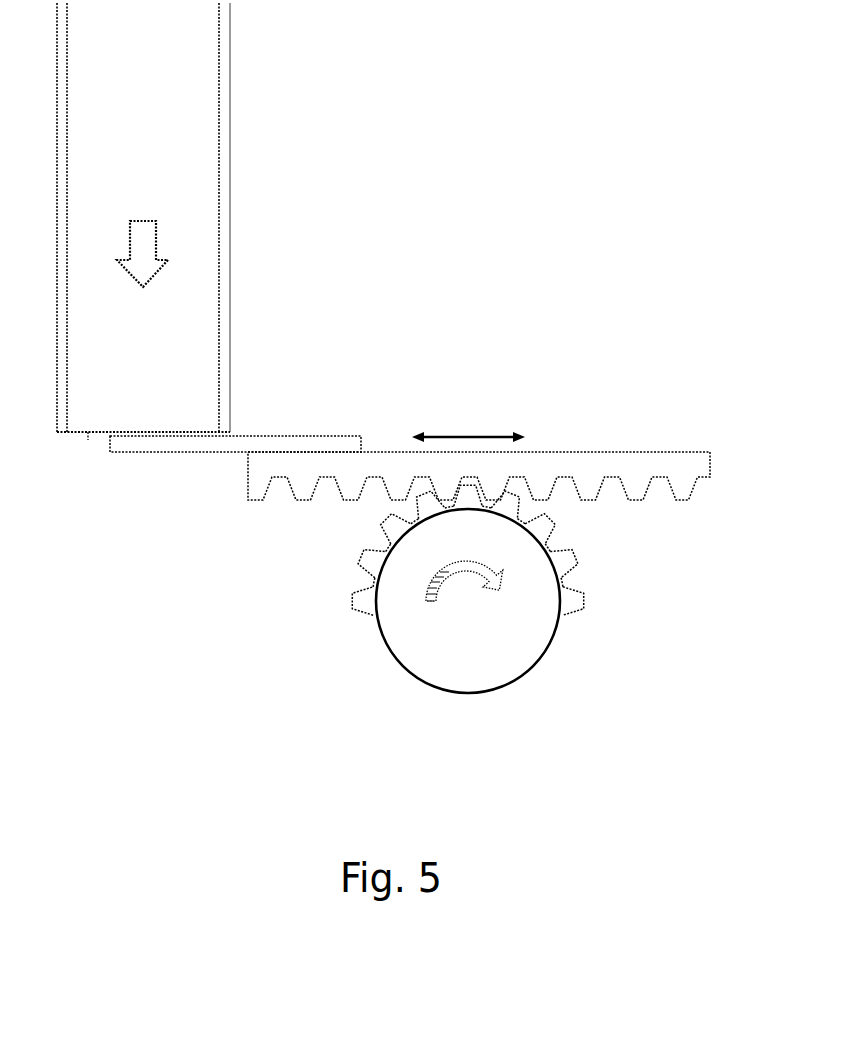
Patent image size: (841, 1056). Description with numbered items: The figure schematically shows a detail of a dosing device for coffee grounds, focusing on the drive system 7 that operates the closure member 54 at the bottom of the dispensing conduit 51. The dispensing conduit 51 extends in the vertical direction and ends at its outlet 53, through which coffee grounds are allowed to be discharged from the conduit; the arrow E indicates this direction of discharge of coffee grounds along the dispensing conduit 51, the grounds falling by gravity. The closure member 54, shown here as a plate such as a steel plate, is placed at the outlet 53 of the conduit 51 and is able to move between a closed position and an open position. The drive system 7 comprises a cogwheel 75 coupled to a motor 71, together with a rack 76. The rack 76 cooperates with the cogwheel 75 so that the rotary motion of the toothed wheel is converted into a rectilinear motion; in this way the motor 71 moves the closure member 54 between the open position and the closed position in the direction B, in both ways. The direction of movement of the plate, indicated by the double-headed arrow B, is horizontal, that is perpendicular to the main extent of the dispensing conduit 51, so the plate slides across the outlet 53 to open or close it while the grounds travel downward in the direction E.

The drive system 7 is at (450, 245).
The dispensing conduit 51 is at (222, 155).
The outlet 53 is at (88, 433).
The closure member 54 is at (177, 440).
The motor 71 is at (477, 668).
The cogwheel 75 is at (543, 532).
The rack 76 is at (591, 458).
The direction of discharge E is at (145, 242).
The direction of movement B is at (468, 427).